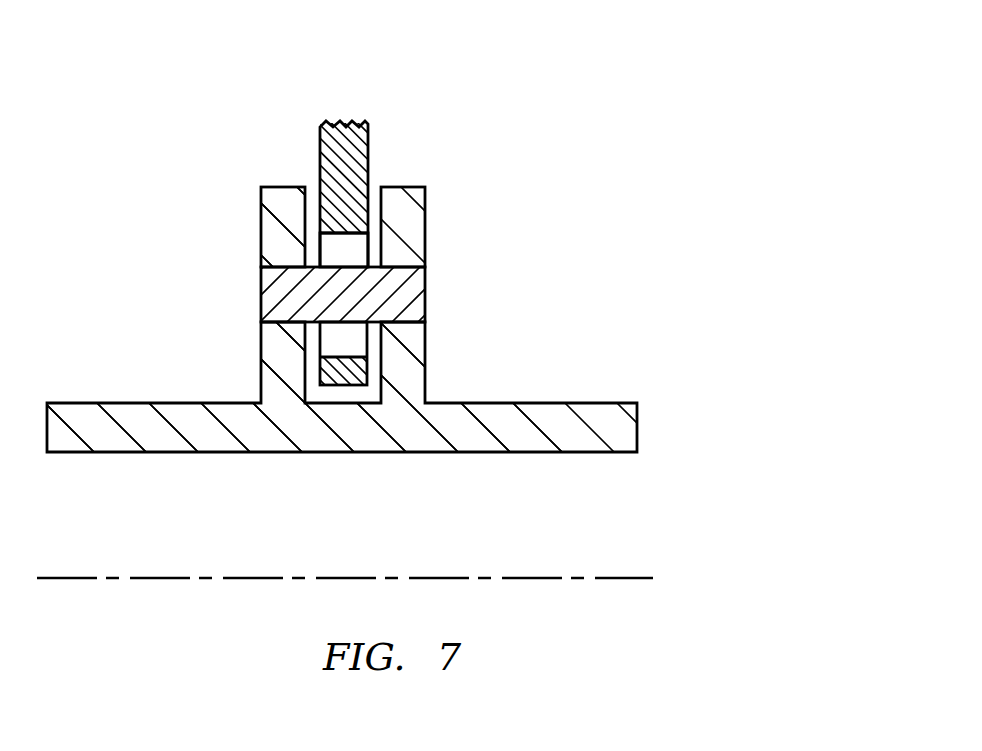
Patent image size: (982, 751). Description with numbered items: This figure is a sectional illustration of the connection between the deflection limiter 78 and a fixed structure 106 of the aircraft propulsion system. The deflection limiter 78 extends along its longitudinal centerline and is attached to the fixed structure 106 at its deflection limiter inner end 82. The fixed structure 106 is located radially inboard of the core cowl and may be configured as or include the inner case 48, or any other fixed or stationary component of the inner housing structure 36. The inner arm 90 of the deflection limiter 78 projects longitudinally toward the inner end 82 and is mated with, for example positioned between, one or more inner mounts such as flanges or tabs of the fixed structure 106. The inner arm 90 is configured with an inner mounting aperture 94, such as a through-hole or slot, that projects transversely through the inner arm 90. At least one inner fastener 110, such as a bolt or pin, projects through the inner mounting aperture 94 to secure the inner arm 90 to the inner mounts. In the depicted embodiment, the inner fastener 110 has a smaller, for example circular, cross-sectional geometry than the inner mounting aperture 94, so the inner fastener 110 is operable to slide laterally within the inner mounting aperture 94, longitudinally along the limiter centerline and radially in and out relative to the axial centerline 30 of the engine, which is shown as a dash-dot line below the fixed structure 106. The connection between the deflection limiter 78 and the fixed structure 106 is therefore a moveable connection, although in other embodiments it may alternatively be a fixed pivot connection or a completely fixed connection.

The deflection limiter 78 is at (375, 262).
The inner arm 90 is at (368, 146).
The inner housing structure 36 is at (425, 344).
The inner mounting aperture 94 is at (352, 254).
The inner fastener 110 is at (425, 295).
The deflection limiter inner end 82 is at (345, 385).
The inner case 48 is at (425, 351).
The fixed structure 106 is at (113, 452).
The axial centerline 30 is at (625, 578).